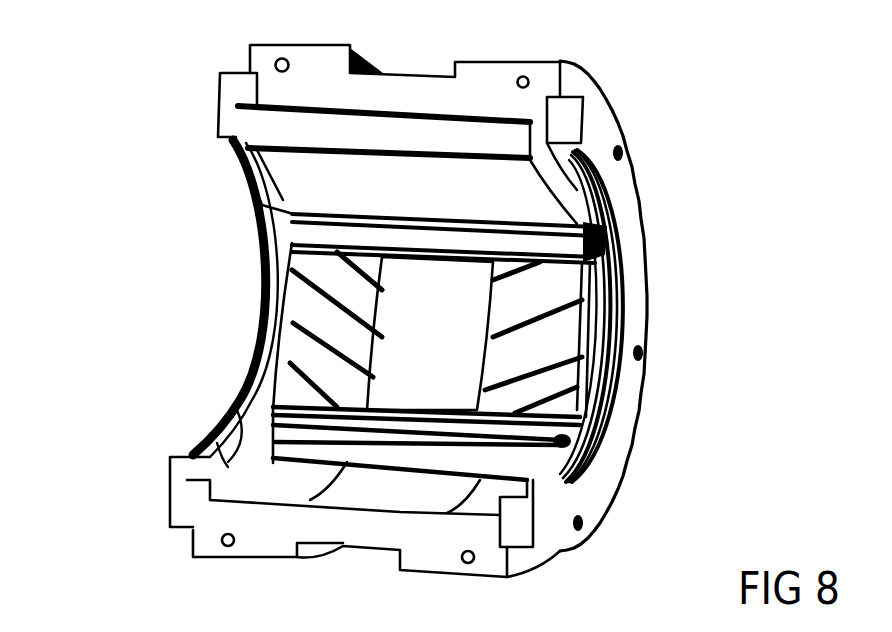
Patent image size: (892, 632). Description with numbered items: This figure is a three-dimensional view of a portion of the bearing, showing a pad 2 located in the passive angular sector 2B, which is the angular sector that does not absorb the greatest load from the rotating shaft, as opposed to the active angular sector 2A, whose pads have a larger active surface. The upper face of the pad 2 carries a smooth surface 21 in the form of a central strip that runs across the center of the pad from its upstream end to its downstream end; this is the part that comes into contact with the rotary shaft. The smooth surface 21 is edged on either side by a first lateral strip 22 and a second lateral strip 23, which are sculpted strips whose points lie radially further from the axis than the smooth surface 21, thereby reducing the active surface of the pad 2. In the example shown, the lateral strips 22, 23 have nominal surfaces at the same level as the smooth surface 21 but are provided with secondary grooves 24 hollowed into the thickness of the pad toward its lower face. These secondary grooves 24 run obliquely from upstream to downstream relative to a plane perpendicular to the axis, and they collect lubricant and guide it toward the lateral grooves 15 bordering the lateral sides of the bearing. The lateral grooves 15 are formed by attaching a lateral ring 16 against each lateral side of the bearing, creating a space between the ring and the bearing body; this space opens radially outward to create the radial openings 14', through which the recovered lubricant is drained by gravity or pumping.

The pad 2 is at (247, 363).
The active angular sector 2A is at (351, 127).
The passive angular sector 2B is at (622, 352).
The radial opening 14' is at (136, 436).
The lateral groove 15 is at (565, 150).
The lateral ring 16 is at (557, 298).
The smooth surface 21 is at (430, 333).
The first lateral strip 22 is at (312, 253).
The second lateral strip 23 is at (600, 252).
The secondary grooves 24 is at (347, 313).